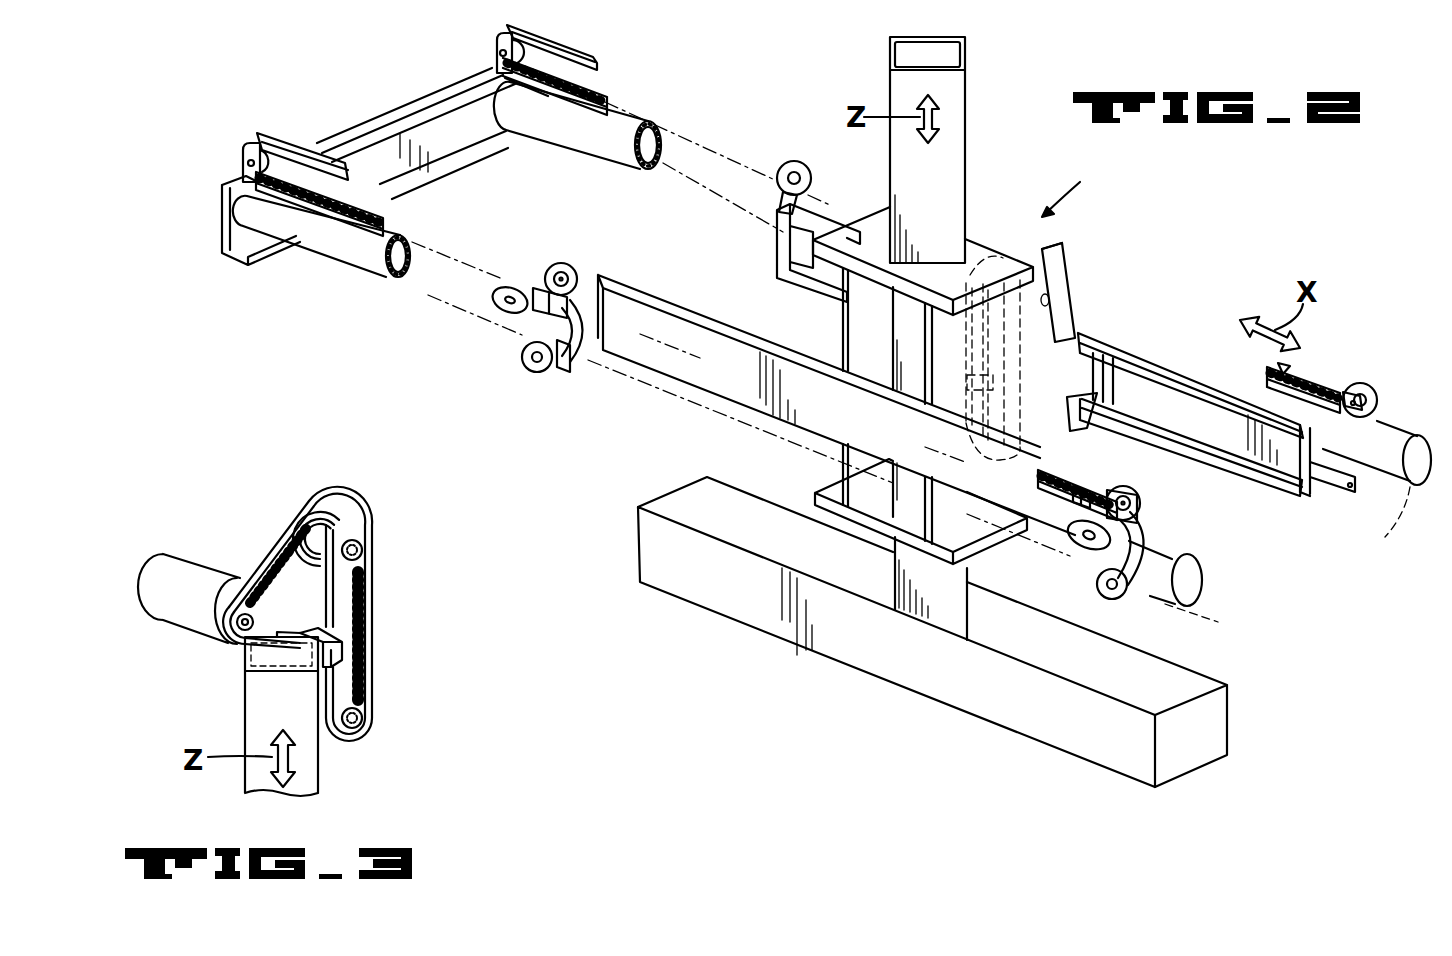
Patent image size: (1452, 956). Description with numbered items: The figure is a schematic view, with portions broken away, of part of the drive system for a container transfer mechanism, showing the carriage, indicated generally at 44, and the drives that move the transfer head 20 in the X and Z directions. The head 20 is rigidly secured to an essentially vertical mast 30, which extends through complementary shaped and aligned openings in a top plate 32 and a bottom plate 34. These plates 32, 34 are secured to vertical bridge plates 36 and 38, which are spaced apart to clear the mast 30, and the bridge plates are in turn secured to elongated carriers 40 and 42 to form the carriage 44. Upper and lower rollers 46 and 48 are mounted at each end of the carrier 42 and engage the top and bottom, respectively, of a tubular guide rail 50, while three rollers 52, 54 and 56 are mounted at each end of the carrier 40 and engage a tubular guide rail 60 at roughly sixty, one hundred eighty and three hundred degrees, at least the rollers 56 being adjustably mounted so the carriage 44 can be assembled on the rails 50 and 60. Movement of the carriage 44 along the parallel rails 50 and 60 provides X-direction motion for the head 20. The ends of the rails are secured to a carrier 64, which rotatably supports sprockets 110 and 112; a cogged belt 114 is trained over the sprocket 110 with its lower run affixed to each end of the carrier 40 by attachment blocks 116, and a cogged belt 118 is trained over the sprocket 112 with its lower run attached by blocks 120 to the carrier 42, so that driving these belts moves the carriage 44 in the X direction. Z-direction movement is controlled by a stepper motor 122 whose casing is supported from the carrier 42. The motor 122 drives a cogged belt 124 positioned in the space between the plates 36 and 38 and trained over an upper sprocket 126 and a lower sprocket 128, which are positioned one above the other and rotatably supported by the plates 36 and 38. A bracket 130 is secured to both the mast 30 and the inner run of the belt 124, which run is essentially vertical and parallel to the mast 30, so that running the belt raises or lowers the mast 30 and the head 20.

In FIG. 2, the transfer head 20 is at (916, 683).
In FIG. 2, the mast 30 is at (890, 66).
In FIG. 3, the mast 30 is at (255, 718).
In FIG. 2, the top plate 32 is at (985, 237).
In FIG. 2, the bottom plate 34 is at (813, 497).
In FIG. 2, the vertical bridge plate 36 is at (843, 321).
In FIG. 2, the vertical bridge plate 38 is at (1107, 327).
In FIG. 2, the carrier 40 is at (688, 300).
In FIG. 2, the carrier 42 is at (1262, 477).
In FIG. 2, the carriage 44 is at (1070, 184).
In FIG. 2, the upper roller 46 is at (783, 160).
In FIG. 2, the lower roller 48 is at (775, 231).
In FIG. 2, the tubular guide rail 50 is at (627, 116).
In FIG. 2, the roller 52 is at (523, 357).
In FIG. 2, the roller 54 is at (573, 265).
In FIG. 2, the roller 56 is at (502, 298).
In FIG. 2, the tubular guide rail 60 is at (349, 260).
In FIG. 2, the carrier 64 is at (393, 113).
In FIG. 2, the sprocket 110 is at (248, 155).
In FIG. 2, the sprocket 112 is at (497, 45).
In FIG. 2, the cogged belt 114 is at (400, 196).
In FIG. 2, the attachment block 116 is at (547, 288).
In FIG. 2, the cogged belt 118 is at (587, 57).
In FIG. 2, the attachment block 120 is at (817, 193).
In FIG. 3, the stepper motor 122 is at (187, 553).
In FIG. 2, the cogged belt 124 is at (1073, 297).
In FIG. 3, the cogged belt 124 is at (373, 597).
In FIG. 2, the upper sprocket 126 is at (1067, 262).
In FIG. 3, the upper sprocket 126 is at (362, 553).
In FIG. 2, the lower sprocket 128 is at (1023, 428).
In FIG. 3, the lower sprocket 128 is at (362, 718).
In FIG. 2, the bracket 130 is at (1017, 377).
In FIG. 3, the bracket 130 is at (342, 650).